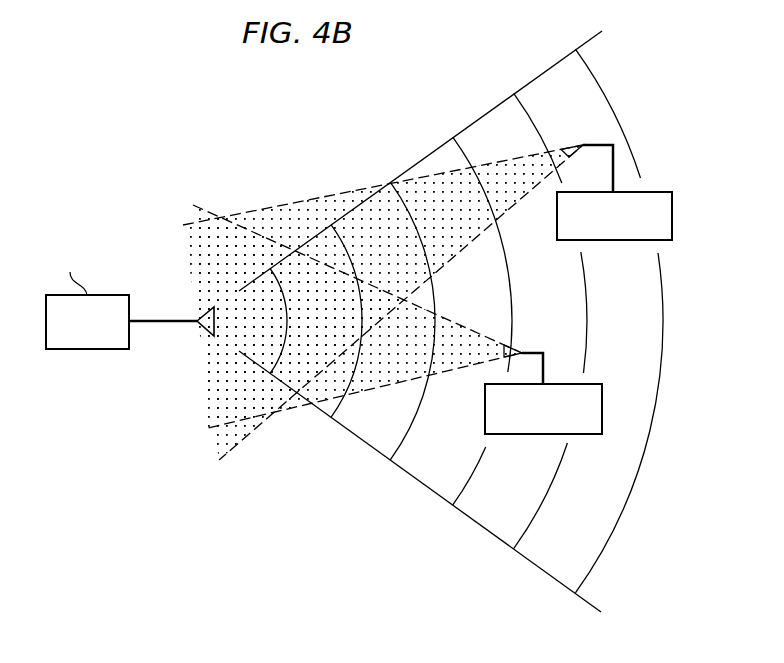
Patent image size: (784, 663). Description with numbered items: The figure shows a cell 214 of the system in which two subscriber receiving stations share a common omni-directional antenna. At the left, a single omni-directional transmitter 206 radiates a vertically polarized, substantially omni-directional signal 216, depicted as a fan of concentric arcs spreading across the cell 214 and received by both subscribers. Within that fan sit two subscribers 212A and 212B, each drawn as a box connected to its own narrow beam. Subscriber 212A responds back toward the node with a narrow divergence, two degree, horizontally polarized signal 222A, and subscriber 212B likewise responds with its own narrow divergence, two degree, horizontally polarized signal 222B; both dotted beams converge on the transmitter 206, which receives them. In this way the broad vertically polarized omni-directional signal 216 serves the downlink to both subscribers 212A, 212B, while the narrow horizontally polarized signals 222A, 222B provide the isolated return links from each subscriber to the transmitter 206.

The omni-directional transmitter 206 is at (118, 295).
The cell 214 is at (450, 321).
The omni-directional signal 216 is at (460, 121).
The horizontally polarized signal 222A is at (312, 210).
The horizontally polarized signal 222B is at (480, 343).
The subscriber 212A is at (672, 200).
The subscriber 212B is at (602, 397).